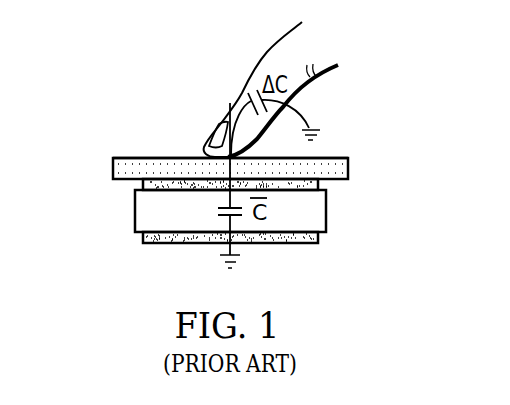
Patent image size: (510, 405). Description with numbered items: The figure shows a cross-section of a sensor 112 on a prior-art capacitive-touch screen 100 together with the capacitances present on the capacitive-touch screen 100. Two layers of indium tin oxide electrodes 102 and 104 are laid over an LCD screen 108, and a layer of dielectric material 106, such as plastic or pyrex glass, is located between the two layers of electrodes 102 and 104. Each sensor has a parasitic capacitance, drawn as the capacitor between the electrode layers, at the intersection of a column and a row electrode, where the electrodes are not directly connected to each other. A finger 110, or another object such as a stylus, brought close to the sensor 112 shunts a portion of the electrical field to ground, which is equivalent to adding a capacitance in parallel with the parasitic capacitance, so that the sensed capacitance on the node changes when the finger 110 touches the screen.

The capacitive-touch screen 100 is at (147, 62).
The ITO electrode layer 102 is at (320, 187).
The ITO electrode layer 104 is at (187, 243).
The dielectric material layer 106 is at (135, 208).
The LCD screen 108 is at (113, 168).
The finger 110 is at (257, 62).
The sensor 112 is at (164, 158).